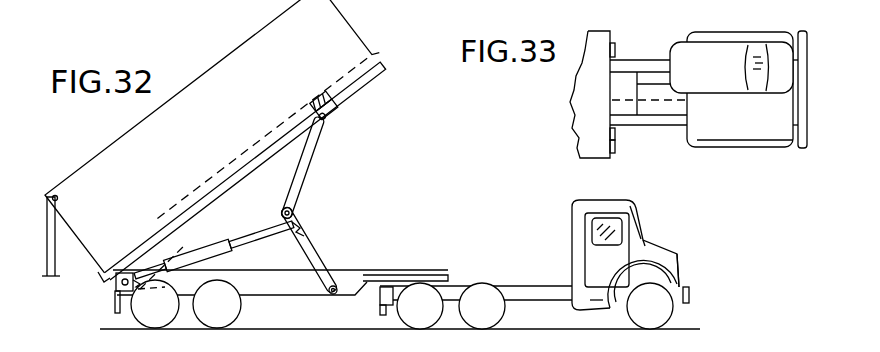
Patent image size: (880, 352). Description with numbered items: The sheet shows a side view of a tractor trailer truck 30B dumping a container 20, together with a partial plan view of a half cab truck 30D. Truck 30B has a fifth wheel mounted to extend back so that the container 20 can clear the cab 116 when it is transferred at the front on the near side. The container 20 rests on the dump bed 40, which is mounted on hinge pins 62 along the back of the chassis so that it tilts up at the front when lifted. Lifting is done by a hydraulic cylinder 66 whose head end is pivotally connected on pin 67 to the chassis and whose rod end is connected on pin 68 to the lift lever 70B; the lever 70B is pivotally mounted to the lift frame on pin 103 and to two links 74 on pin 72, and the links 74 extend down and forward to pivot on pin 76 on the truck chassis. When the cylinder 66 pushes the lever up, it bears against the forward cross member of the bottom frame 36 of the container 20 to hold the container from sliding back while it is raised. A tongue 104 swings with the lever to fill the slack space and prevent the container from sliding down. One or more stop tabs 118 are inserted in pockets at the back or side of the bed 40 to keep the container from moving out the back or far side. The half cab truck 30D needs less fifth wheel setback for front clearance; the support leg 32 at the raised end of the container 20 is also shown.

In FIG. 32, the container 20 is at (347, 23).
In FIG. 33, the container 20 is at (603, 29).
In FIG. 32, the bottom frame 36 is at (374, 56).
In FIG. 32, the tongue 104 is at (333, 103).
In FIG. 32, the dump bed 40 is at (331, 105).
In FIG. 32, the pin 103 is at (324, 123).
In FIG. 32, the lift lever 70B is at (306, 170).
In FIG. 32, the pin 72 is at (293, 212).
In FIG. 32, the pin 68 is at (305, 230).
In FIG. 32, the link arm 74 is at (323, 263).
In FIG. 32, the pin 76 is at (330, 297).
In FIG. 32, the hydraulic cylinder 66 is at (227, 248).
In FIG. 32, the pin 67 is at (180, 248).
In FIG. 32, the support leg 32 is at (45, 266).
In FIG. 32, the stop tab 118 is at (99, 283).
In FIG. 32, the hinge pin 62 is at (116, 287).
In FIG. 32, the truck 30B is at (592, 264).
In FIG. 32, the cab 116 is at (572, 248).
In FIG. 33, the truck 30D is at (703, 147).